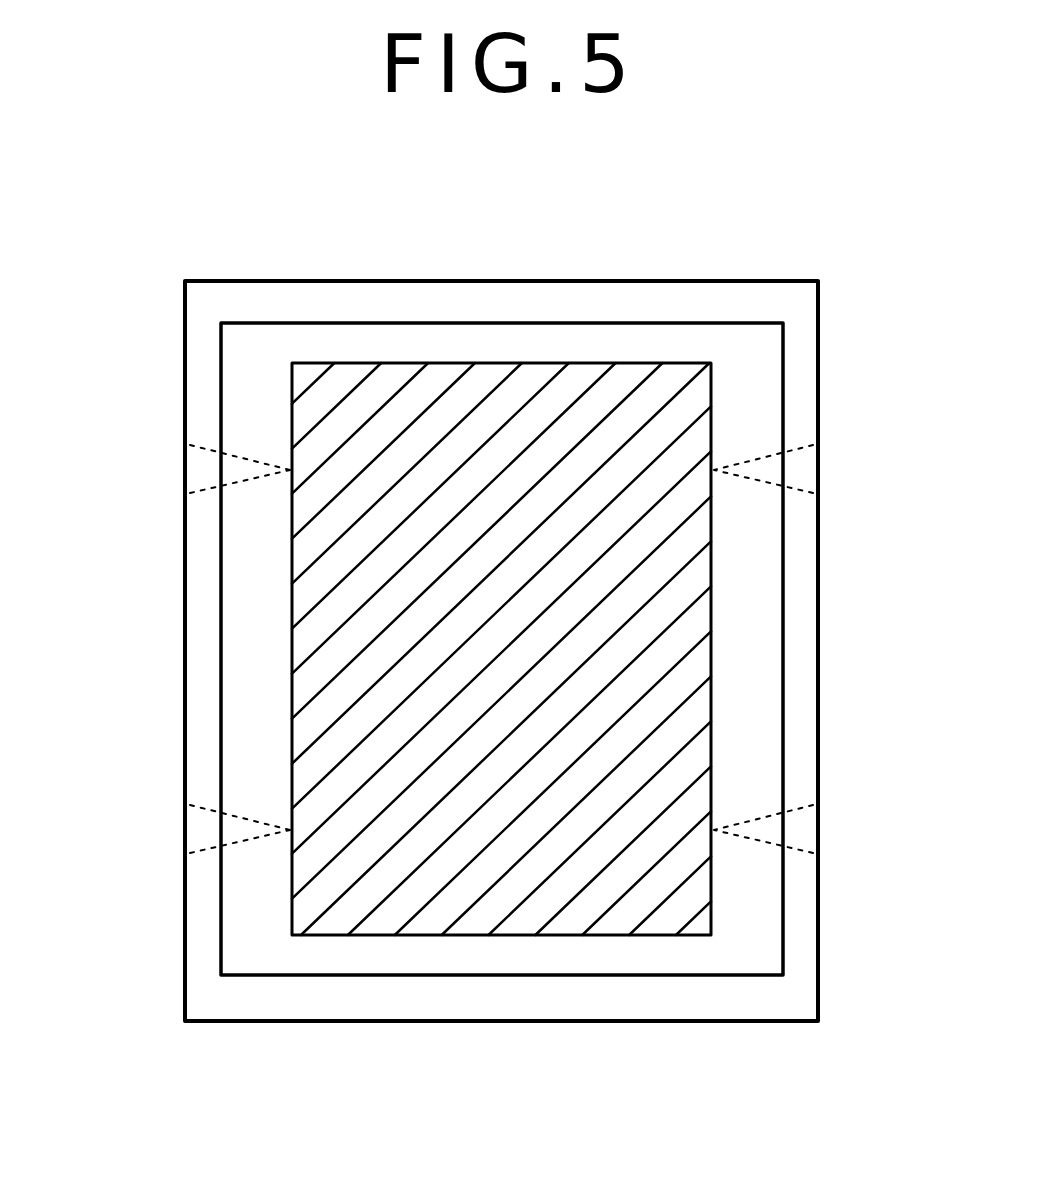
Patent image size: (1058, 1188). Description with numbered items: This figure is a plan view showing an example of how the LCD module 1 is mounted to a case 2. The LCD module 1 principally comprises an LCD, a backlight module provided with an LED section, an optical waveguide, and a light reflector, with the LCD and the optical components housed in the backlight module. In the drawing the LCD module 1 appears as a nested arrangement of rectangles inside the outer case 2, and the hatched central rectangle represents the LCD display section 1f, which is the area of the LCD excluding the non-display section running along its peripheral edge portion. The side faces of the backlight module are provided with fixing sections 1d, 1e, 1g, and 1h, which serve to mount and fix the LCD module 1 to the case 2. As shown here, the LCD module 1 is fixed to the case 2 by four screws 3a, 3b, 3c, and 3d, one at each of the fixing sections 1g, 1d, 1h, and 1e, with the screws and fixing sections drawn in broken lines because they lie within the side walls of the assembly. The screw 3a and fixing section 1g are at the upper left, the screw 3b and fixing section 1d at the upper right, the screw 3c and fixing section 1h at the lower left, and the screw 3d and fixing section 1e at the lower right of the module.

The LCD module 1 is at (783, 640).
The case 2 is at (315, 1022).
The LCD display section 1f is at (415, 393).
The screw 3a is at (202, 457).
The screw 3b is at (801, 457).
The screw 3c is at (202, 817).
The screw 3d is at (801, 817).
The fixing section 1d is at (818, 478).
The fixing section 1e is at (818, 838).
The fixing section 1g is at (185, 478).
The fixing section 1h is at (185, 838).